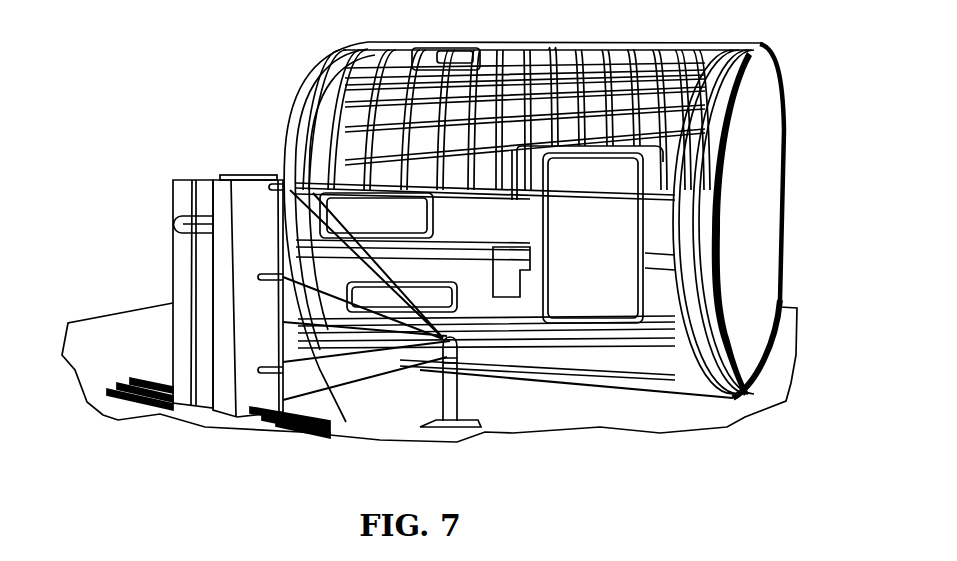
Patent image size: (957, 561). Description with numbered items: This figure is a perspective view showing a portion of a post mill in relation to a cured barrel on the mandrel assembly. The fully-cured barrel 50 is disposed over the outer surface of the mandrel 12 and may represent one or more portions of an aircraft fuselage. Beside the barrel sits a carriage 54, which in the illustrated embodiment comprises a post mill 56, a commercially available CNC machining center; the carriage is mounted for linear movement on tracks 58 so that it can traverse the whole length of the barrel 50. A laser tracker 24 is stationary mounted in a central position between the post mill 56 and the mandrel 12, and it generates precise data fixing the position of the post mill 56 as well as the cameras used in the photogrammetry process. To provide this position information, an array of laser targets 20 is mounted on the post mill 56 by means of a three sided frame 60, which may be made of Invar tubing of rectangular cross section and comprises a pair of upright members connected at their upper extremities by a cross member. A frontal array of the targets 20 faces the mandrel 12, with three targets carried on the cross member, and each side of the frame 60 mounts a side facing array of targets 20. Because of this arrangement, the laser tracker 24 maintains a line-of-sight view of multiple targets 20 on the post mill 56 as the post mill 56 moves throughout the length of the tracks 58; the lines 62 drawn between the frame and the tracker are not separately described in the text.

The mandrel 12 is at (297, 100).
The barrel 50 is at (532, 170).
The carriage 54 is at (150, 291).
The post mill 56 is at (173, 192).
The three sided frame 60 is at (210, 176).
The targets 20 is at (257, 292).
The tracks 58 is at (118, 374).
The cables 62 is at (298, 332).
The laser tracker 24 is at (453, 392).